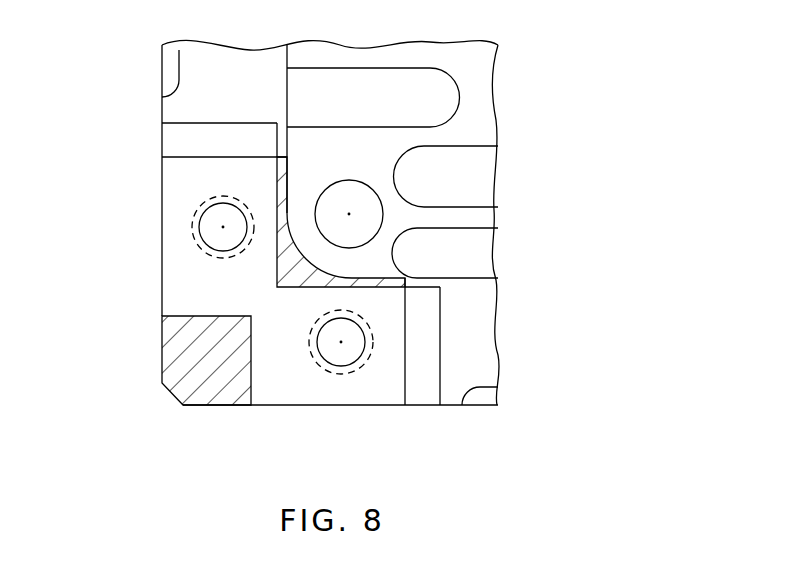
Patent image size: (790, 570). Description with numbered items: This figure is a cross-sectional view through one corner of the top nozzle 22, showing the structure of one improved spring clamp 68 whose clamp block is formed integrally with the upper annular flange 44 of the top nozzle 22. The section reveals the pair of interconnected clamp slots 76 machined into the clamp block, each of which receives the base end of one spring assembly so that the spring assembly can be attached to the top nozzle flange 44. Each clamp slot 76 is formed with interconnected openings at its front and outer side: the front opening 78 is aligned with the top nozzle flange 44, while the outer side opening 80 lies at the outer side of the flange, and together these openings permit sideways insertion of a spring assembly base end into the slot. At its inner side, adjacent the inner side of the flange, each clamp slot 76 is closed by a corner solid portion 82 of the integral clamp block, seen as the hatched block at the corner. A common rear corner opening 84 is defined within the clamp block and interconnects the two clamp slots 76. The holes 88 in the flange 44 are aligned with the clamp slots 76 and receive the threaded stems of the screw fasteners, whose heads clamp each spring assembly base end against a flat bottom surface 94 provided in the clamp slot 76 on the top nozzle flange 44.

The top nozzle 22 is at (524, 270).
The upper annular flange 44 is at (163, 108).
The improved spring clamp 68 is at (148, 401).
The clamp slot 76 is at (156, 239).
The front opening 78 is at (187, 157).
The outer side opening 80 is at (162, 279).
The corner solid portion 82 is at (162, 345).
The common rear corner opening 84 is at (271, 298).
The hole 88 is at (202, 238).
The flat bottom surface 94 is at (199, 192).